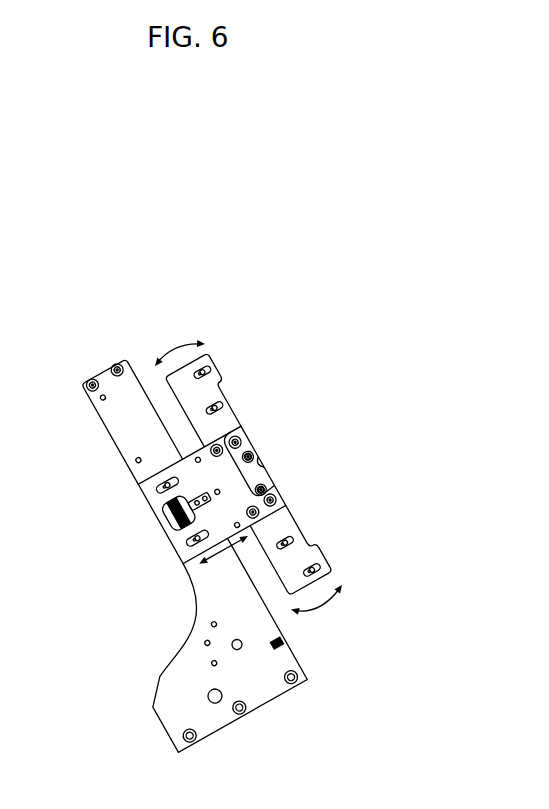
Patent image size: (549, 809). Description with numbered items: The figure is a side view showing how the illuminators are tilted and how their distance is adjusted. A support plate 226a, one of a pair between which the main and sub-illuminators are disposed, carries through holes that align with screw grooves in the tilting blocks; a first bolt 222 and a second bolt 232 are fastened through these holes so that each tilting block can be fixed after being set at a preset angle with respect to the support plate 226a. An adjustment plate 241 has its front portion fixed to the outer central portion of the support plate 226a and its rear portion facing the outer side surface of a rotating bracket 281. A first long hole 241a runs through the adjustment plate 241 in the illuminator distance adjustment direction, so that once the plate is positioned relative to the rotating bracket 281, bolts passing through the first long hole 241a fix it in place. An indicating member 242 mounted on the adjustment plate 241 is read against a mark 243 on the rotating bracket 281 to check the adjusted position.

The support plate 226a is at (207, 392).
The second bolt 232 is at (250, 456).
The first bolt 222 is at (262, 490).
The adjustment plate 241 is at (183, 462).
The first long hole 241a is at (152, 496).
The mark 243 is at (162, 520).
The indicating member 242 is at (165, 534).
The rotating bracket 281 is at (170, 714).